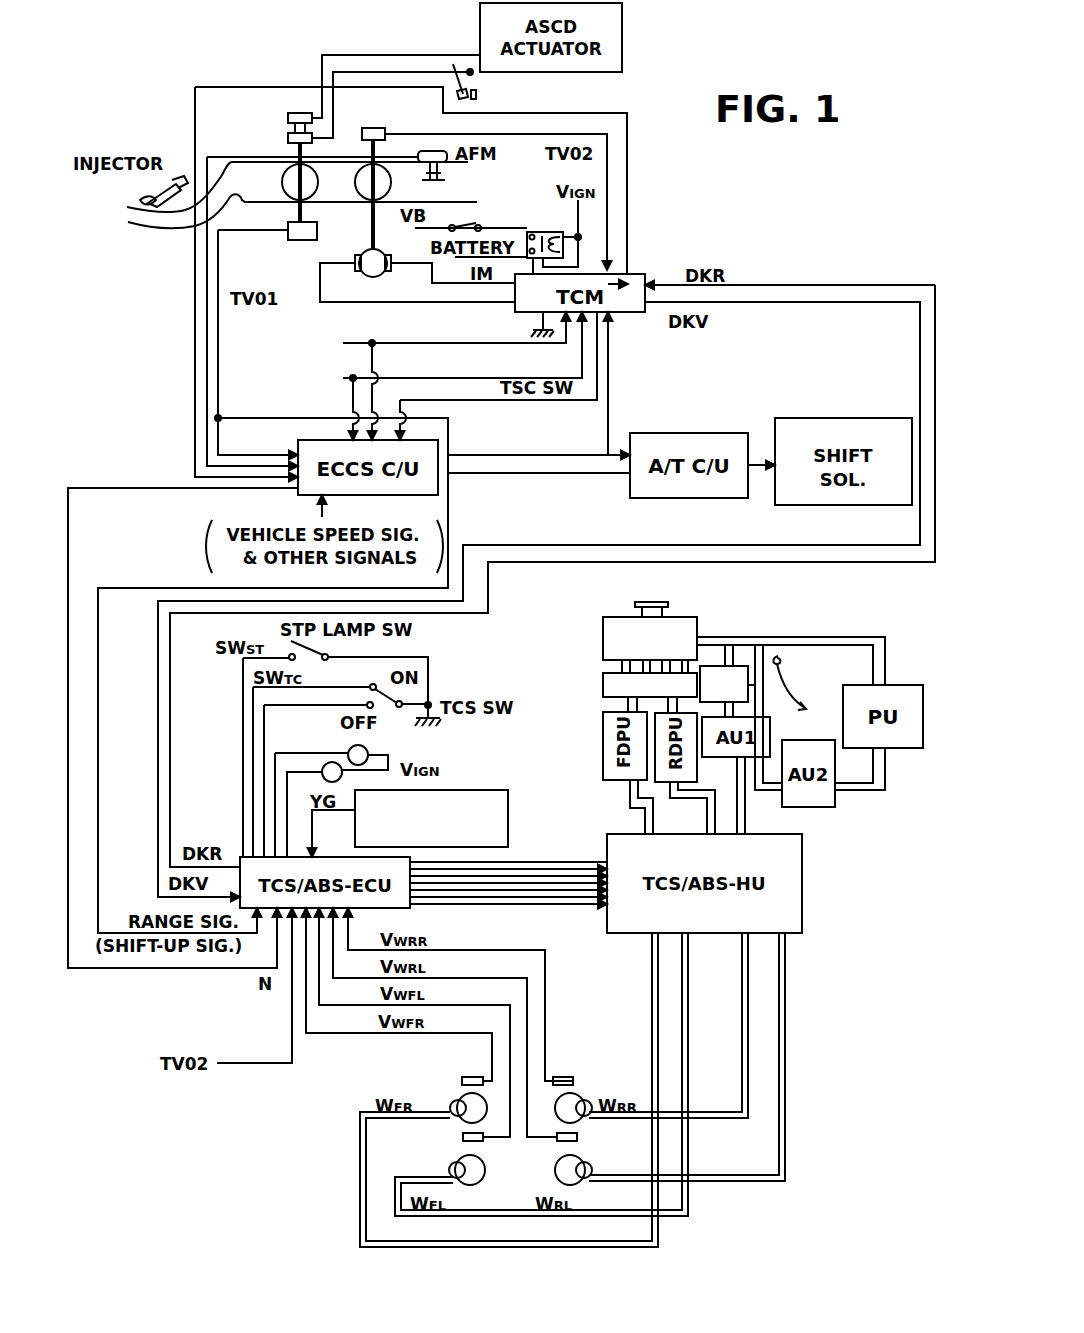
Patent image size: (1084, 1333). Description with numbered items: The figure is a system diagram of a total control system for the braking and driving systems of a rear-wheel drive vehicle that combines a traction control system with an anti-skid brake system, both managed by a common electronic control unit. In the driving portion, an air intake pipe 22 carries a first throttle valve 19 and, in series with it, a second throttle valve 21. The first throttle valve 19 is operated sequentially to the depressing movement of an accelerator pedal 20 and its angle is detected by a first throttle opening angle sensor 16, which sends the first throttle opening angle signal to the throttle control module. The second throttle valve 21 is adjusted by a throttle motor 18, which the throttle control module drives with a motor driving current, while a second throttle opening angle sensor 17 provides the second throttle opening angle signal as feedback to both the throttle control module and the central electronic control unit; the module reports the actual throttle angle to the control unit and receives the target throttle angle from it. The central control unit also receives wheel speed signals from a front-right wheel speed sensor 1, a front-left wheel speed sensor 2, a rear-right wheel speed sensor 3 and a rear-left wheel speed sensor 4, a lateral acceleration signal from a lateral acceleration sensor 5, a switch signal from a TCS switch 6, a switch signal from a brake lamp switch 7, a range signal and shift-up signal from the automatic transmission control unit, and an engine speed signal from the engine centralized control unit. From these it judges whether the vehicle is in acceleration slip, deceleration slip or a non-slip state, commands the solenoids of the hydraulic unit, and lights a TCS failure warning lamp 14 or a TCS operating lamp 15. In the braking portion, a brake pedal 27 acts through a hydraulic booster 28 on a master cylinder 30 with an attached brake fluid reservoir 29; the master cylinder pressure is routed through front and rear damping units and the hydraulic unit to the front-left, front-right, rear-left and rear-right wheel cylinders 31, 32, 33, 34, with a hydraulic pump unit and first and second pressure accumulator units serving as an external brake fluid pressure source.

The front-right wheel speed sensor 1 is at (471, 1077).
The front-left wheel speed sensor 2 is at (462, 1137).
The rear-right wheel speed sensor 3 is at (561, 1077).
The rear-left wheel speed sensor 4 is at (579, 1137).
The lateral acceleration sensor 5 is at (508, 813).
The TCS switch 6 is at (431, 694).
The brake lamp switch 7 is at (320, 668).
The TCS failure warning lamp 14 is at (350, 748).
The TCS operating lamp 15 is at (322, 774).
The first throttle opening angle sensor 16 is at (317, 230).
The second throttle opening angle sensor 17 is at (378, 128).
The throttle motor 18 is at (380, 277).
The first throttle valve 19 is at (291, 176).
The accelerator pedal 20 is at (477, 94).
The second throttle valve 21 is at (380, 218).
The air intake pipe 22 is at (268, 199).
The brake pedal 27 is at (788, 692).
The hydraulic booster 28 is at (738, 666).
The brake fluid reservoir 29 is at (603, 643).
The master cylinder 30 is at (603, 688).
The front-left wheel cylinder 31 is at (464, 1184).
The front-right wheel cylinder 32 is at (462, 1102).
The rear-left wheel cylinder 33 is at (583, 1181).
The rear-right wheel cylinder 34 is at (585, 1098).